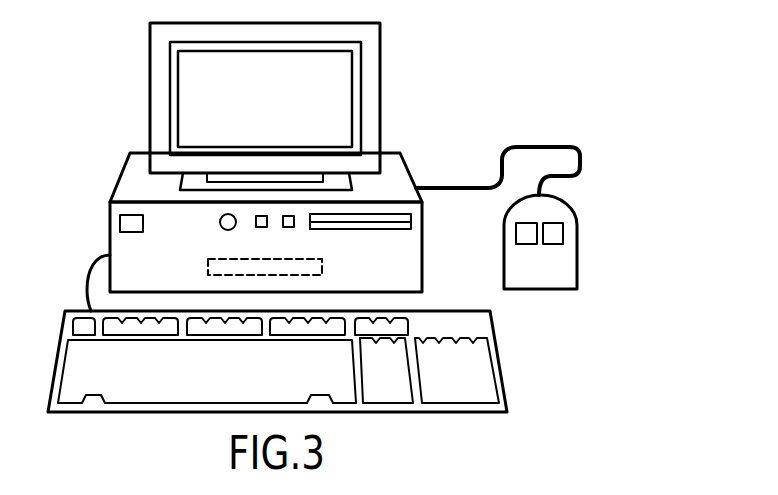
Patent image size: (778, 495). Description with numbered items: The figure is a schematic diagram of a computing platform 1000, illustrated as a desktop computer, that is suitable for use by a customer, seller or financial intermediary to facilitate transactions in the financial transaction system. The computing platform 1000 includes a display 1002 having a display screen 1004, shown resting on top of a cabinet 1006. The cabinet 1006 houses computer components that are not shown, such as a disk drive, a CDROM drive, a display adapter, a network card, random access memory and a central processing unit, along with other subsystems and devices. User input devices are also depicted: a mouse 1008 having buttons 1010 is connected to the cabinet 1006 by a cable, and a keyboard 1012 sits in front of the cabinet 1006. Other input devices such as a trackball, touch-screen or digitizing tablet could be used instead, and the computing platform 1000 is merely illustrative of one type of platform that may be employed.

The computing platform 1000 is at (495, 82).
The display 1002 is at (381, 68).
The display screen 1004 is at (188, 99).
The cabinet 1006 is at (409, 172).
The mouse 1008 is at (538, 290).
The buttons 1010 is at (516, 236).
The keyboard 1012 is at (504, 377).